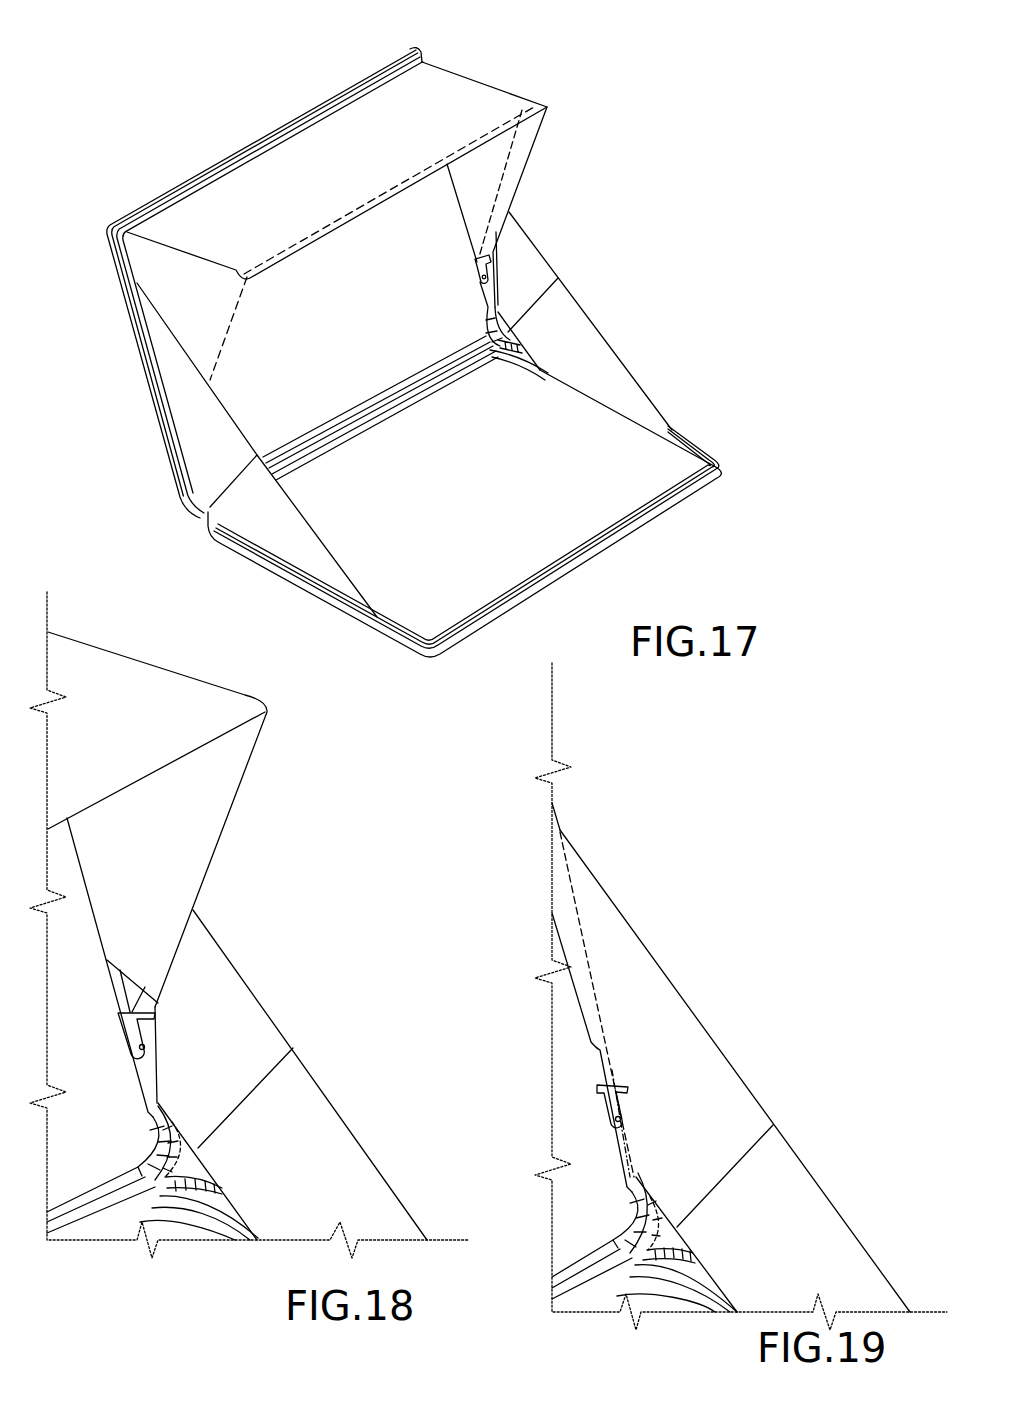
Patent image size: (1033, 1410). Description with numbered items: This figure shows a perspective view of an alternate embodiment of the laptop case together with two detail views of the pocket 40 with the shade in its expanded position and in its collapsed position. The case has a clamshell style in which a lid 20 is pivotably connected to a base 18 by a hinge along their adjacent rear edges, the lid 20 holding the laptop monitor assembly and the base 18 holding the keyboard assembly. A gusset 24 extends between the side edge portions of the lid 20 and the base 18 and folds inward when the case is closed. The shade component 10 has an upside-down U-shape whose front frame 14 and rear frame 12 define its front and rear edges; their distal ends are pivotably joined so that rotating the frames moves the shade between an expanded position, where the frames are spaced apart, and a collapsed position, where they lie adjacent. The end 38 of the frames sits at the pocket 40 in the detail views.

In FIG. 17, the shade component 10 is at (465, 87).
In FIG. 18, the shade component 10 is at (118, 660).
In FIG. 17, the rear frame 12 is at (470, 240).
In FIG. 18, the rear frame 12 is at (118, 993).
In FIG. 19, the rear frame 12 is at (593, 1062).
In FIG. 17, the front frame 14 is at (400, 177).
In FIG. 18, the front frame 14 is at (157, 1002).
In FIG. 19, the front frame 14 is at (613, 1070).
In FIG. 17, the base 18 is at (257, 567).
In FIG. 17, the lid 20 is at (182, 183).
In FIG. 17, the gusset 24 is at (600, 360).
In FIG. 17, the strap end 38 is at (477, 287).
In FIG. 18, the strap end 38 is at (137, 1067).
In FIG. 19, the strap end 38 is at (605, 1117).
In FIG. 17, the pocket 40 is at (477, 268).
In FIG. 18, the pocket 40 is at (143, 1023).
In FIG. 19, the pocket 40 is at (623, 1102).